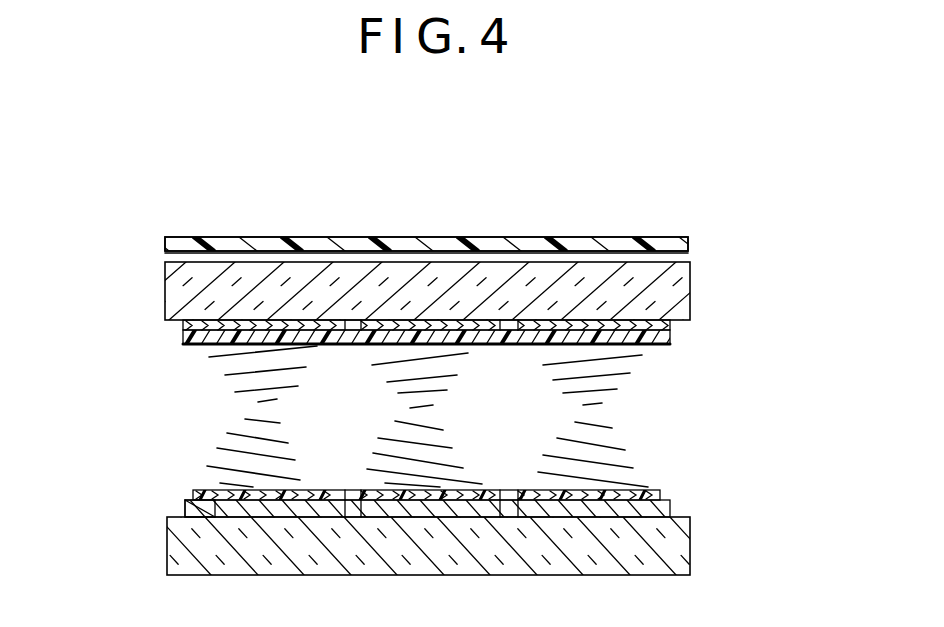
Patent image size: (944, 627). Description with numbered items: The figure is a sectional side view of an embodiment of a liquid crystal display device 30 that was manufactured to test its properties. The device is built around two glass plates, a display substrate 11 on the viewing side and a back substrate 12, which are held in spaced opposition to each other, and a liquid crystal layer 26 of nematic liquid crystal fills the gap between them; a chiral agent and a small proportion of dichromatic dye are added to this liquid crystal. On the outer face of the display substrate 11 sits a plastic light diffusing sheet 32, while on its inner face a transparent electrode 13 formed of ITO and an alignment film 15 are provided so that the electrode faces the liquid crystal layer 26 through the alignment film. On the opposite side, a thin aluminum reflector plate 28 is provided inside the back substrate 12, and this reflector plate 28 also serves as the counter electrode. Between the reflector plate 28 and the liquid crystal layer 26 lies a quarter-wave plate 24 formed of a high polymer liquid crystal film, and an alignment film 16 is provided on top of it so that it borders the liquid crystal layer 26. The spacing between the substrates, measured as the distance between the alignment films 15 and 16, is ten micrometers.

The liquid crystal display device 30 is at (621, 232).
The light diffusing sheet 32 is at (690, 246).
The display substrate 11 is at (672, 296).
The transparent electrode 13 is at (186, 325).
The alignment film 15 is at (672, 340).
The liquid crystal layer 26 is at (617, 390).
The alignment film 16 is at (658, 494).
The quarter-wave plate 24 is at (186, 500).
The reflector plate 28 is at (216, 516).
The back substrate 12 is at (675, 545).